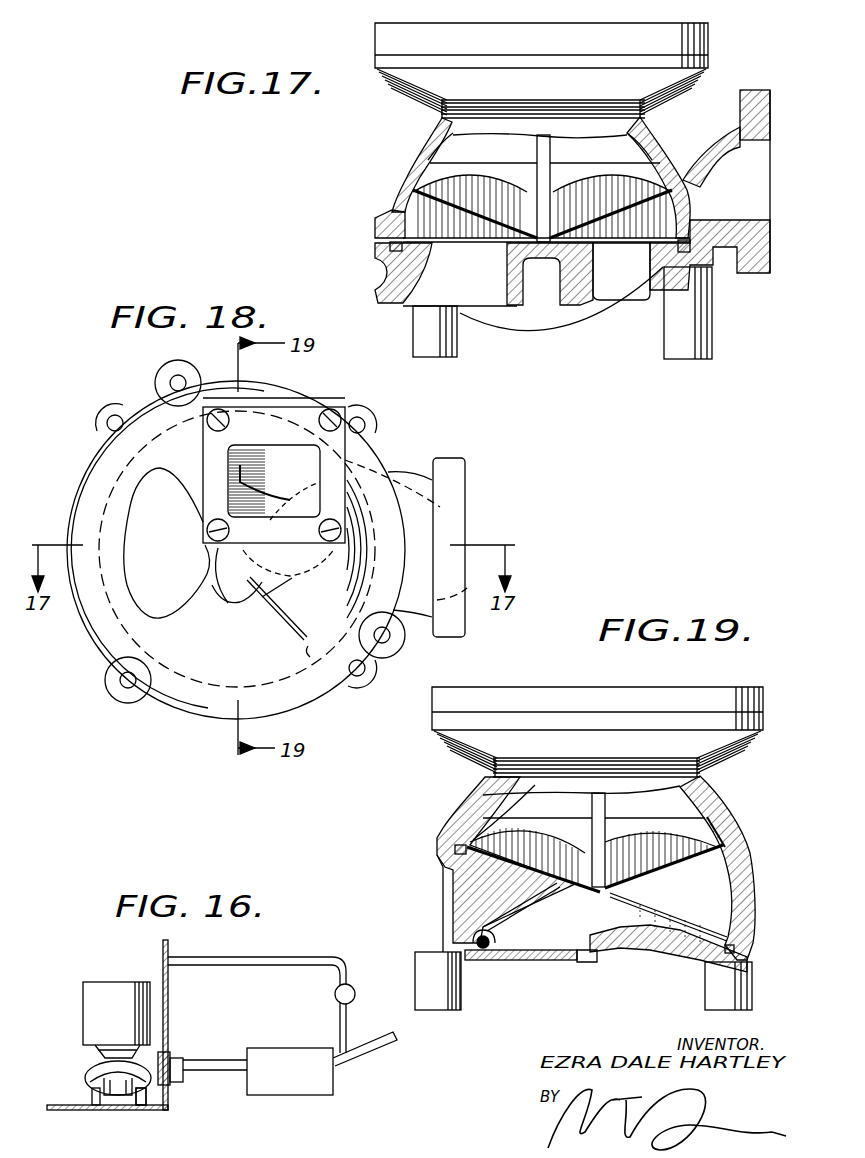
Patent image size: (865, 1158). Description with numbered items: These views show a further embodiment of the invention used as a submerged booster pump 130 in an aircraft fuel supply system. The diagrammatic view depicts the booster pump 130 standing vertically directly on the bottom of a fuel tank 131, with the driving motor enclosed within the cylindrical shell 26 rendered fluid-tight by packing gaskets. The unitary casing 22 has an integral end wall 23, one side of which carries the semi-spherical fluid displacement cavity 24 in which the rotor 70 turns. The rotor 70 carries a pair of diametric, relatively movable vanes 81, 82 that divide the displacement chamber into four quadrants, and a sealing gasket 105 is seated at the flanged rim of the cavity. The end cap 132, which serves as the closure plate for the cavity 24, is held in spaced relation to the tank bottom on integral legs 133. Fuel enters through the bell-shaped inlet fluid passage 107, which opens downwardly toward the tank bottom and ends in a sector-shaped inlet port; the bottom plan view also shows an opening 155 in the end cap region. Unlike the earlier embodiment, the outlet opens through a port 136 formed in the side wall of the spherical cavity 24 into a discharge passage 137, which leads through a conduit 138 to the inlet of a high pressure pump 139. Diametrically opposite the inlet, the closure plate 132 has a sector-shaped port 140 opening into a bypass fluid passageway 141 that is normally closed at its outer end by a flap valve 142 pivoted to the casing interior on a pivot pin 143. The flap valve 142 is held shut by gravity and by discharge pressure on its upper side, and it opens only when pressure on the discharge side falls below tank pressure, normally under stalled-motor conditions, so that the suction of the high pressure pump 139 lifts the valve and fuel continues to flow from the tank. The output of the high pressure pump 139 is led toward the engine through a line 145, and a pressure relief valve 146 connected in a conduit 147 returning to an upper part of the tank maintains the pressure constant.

In FIG. 17, the cylindrical shell 26 is at (377, 42).
In FIG. 19, the cylindrical shell 26 is at (705, 693).
In FIG. 16, the cylindrical shell 26 is at (90, 1013).
In FIG. 17, the end wall 23 is at (440, 108).
In FIG. 16, the end wall 23 is at (100, 1054).
In FIG. 17, the booster pump 130 is at (398, 157).
In FIG. 18, the booster pump 130 is at (130, 714).
In FIG. 19, the booster pump 130 is at (437, 855).
In FIG. 16, the booster pump 130 is at (82, 997).
In FIG. 17, the fluid displacement cavity 24 is at (412, 200).
In FIG. 19, the fluid displacement cavity 24 is at (727, 873).
In FIG. 17, the casing 22 is at (660, 95).
In FIG. 17, the rotor 70 is at (650, 150).
In FIG. 19, the rotor 70 is at (717, 827).
In FIG. 17, the discharge passage 137 is at (748, 150).
In FIG. 18, the discharge passage 137 is at (466, 522).
In FIG. 17, the vane 82 is at (537, 152).
In FIG. 19, the vane 82 is at (710, 895).
In FIG. 17, the vane 81 is at (672, 205).
In FIG. 19, the vane 81 is at (592, 806).
In FIG. 17, the sealing gasket 105 is at (390, 245).
In FIG. 17, the outlet port 136 is at (692, 228).
In FIG. 18, the outlet port 136 is at (310, 657).
In FIG. 17, the end cap 132 is at (385, 262).
In FIG. 18, the end cap 132 is at (373, 445).
In FIG. 19, the end cap 132 is at (453, 895).
In FIG. 16, the end cap 132 is at (92, 1083).
In FIG. 17, the inlet fluid passage 107 is at (407, 306).
In FIG. 18, the inlet fluid passage 107 is at (183, 622).
In FIG. 17, the legs 133 is at (438, 333).
In FIG. 18, the legs 133 is at (160, 376).
In FIG. 19, the legs 133 is at (718, 988).
In FIG. 16, the legs 133 is at (145, 1106).
In FIG. 18, the flap valve 142 is at (283, 457).
In FIG. 19, the flap valve 142 is at (541, 957).
In FIG. 18, the outlet opening 155 is at (182, 490).
In FIG. 18, the sector-shaped port 140 is at (295, 600).
In FIG. 19, the bypass fluid passageway 141 is at (646, 932).
In FIG. 19, the pivot pin 143 is at (486, 950).
In FIG. 16, the fuel tank 131 is at (74, 1109).
In FIG. 16, the conduit 138 is at (205, 1061).
In FIG. 16, the high pressure pump 139 is at (286, 1097).
In FIG. 16, the discharge hose 145 is at (386, 1043).
In FIG. 16, the pressure relief valve 146 is at (352, 987).
In FIG. 16, the conduit 147 is at (340, 1012).